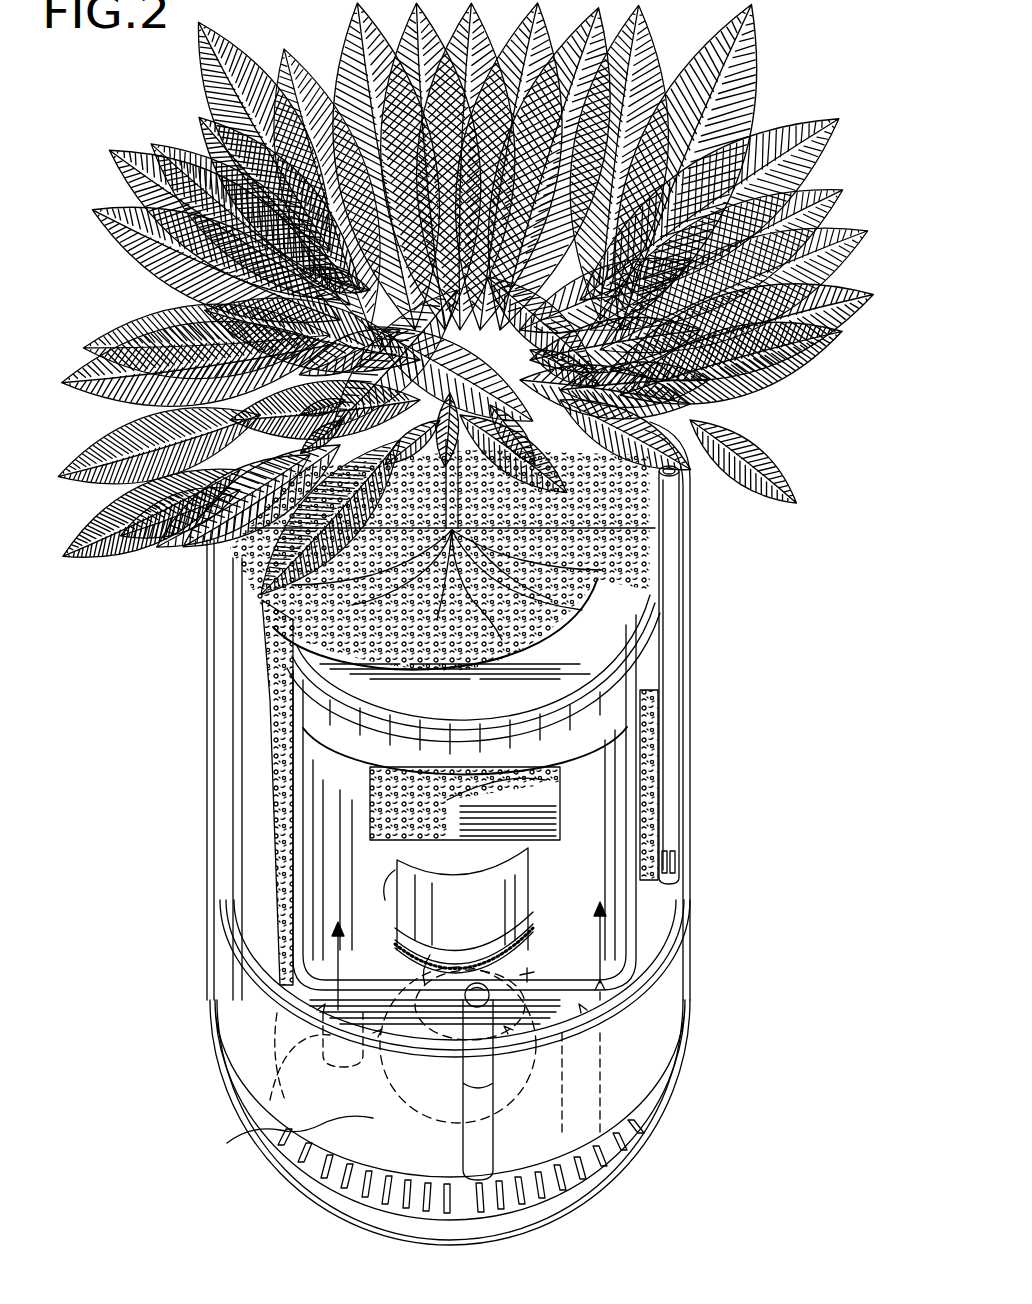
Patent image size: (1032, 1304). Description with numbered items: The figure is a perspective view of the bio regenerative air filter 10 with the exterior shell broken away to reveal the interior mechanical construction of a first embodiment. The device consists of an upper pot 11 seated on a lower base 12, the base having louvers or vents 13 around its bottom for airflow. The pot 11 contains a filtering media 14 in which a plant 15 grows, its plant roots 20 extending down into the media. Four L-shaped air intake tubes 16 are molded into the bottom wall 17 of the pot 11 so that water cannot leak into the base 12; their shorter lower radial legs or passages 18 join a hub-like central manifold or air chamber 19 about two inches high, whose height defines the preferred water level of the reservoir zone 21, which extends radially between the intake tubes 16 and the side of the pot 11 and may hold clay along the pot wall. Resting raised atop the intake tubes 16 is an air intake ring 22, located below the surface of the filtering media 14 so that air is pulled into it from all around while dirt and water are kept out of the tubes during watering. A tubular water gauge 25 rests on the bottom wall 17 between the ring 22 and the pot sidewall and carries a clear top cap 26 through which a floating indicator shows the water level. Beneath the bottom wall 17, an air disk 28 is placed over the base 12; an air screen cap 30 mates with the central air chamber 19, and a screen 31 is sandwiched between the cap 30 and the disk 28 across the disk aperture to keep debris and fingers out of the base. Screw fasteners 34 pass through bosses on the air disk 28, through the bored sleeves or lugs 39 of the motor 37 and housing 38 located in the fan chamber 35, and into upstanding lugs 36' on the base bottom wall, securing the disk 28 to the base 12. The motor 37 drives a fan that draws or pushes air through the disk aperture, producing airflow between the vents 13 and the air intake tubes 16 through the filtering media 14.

The bio regenerative air filter 10 is at (200, 1089).
The upper pot 11 is at (693, 527).
The lower base 12 is at (687, 980).
The louvers or vents 13 is at (640, 1185).
The filtering media 14 is at (292, 604).
The plant 15 is at (172, 570).
The air intake tubes 16 is at (325, 853).
The bottom wall of the pot 17 is at (650, 923).
The lower radial legs or passages 18 is at (380, 862).
The central manifold or air chamber 19 is at (461, 903).
The plant roots 20 is at (338, 598).
The reservoir zone 21 is at (328, 958).
The air intake ring 22 is at (297, 713).
The tubular water gauge 25 is at (672, 640).
The clear top cap 26 is at (670, 505).
The air disk 28 is at (387, 1060).
The air screen cap 30 is at (433, 953).
The screen 31 is at (430, 958).
The screw fasteners 34 is at (562, 1073).
The fan chamber 35 is at (282, 1144).
The upstanding lugs 36' is at (613, 1174).
The motor 37 is at (445, 1093).
The housing 38 is at (535, 974).
The sleeves or lugs 39 is at (503, 1077).